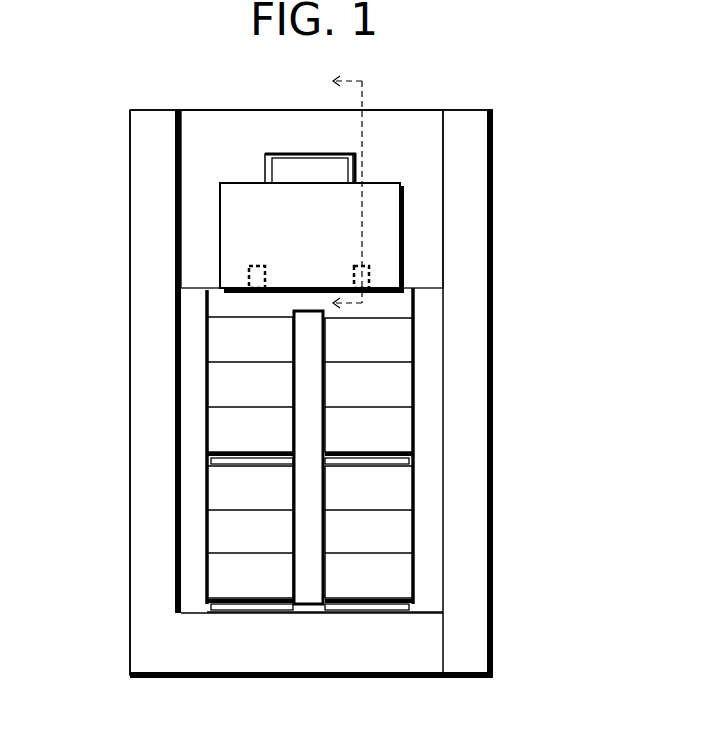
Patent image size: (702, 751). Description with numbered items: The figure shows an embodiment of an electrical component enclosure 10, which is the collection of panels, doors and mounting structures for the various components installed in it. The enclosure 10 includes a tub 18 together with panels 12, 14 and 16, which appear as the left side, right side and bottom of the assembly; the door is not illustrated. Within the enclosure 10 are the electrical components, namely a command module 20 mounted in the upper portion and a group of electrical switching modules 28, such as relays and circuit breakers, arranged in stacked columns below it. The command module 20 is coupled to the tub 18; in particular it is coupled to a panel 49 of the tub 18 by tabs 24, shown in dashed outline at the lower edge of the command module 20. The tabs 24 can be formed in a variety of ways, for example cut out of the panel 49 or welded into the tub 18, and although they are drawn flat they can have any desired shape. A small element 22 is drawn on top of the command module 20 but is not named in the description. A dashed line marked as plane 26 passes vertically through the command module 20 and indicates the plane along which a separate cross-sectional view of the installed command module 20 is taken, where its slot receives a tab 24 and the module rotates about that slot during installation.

The enclosure 10 is at (89, 122).
The panel 12 is at (147, 362).
The panel 14 is at (472, 370).
The panel 16 is at (338, 658).
The tub 18 is at (247, 110).
The command module 20 is at (365, 248).
The connector on command module 22 is at (307, 154).
The tabs 24 is at (370, 273).
The plane 26 is at (363, 92).
The electrical switching modules 28 is at (398, 435).
The panel 49 is at (430, 138).